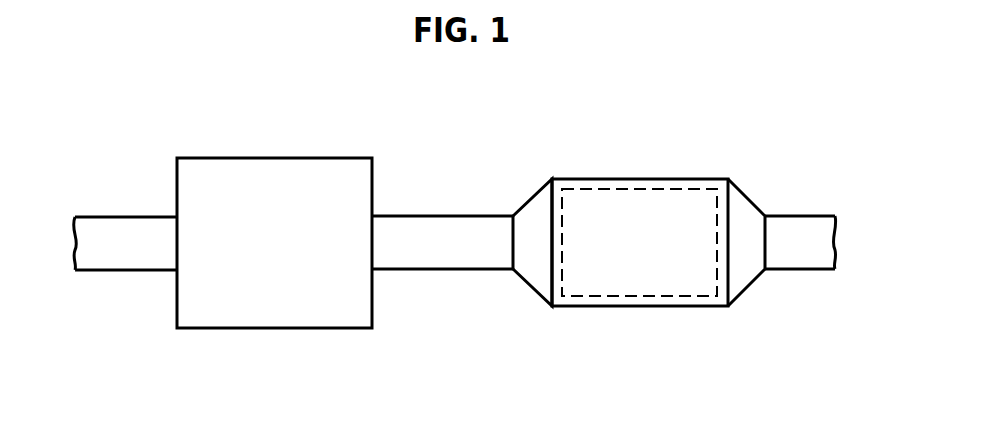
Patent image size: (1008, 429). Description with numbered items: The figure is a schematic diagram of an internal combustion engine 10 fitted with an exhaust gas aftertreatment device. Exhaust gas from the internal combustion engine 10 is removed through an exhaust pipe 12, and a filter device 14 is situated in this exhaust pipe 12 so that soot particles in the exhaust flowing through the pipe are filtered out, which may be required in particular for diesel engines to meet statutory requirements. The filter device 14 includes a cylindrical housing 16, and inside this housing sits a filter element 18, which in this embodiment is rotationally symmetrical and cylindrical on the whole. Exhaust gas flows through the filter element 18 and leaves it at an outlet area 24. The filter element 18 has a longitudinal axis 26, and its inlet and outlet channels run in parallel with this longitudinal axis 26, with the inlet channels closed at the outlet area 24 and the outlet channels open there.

The internal combustion engine 10 is at (272, 178).
The exhaust pipe 12 is at (440, 232).
The filter device 14 is at (782, 166).
The cylindrical housing 16 is at (694, 179).
The filter element 18 is at (616, 189).
The outlet area 24 is at (510, 252).
The longitudinal axis 26 is at (768, 253).